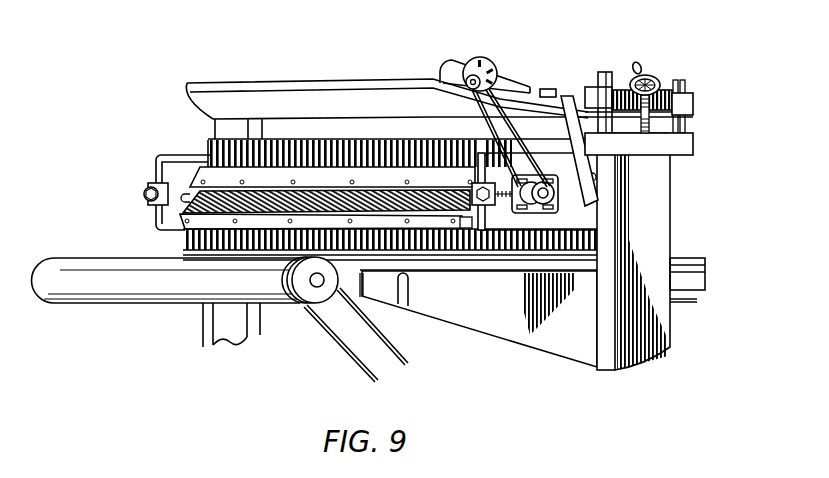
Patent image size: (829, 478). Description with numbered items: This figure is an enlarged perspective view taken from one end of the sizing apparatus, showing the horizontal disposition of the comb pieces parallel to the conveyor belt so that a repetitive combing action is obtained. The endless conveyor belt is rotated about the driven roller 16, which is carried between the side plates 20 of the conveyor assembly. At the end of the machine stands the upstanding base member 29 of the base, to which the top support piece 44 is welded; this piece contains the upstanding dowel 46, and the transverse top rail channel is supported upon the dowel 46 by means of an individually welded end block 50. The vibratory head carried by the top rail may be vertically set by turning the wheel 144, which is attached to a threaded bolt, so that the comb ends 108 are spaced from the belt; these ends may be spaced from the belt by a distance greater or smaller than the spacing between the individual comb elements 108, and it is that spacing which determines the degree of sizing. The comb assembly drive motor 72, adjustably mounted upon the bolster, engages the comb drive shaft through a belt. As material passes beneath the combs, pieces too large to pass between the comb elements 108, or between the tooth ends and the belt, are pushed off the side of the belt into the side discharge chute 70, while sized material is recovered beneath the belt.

The driven roller 16 is at (321, 284).
The side plates 20 is at (692, 283).
The upstanding base member 29 is at (653, 228).
The top support piece 44 is at (682, 145).
The upstanding dowel 46 is at (603, 72).
The end block 50 is at (685, 105).
The side discharge chute 70 is at (542, 327).
The comb assembly drive motor 72 is at (505, 69).
The comb elements 108 is at (195, 238).
The wheel 144 is at (648, 76).